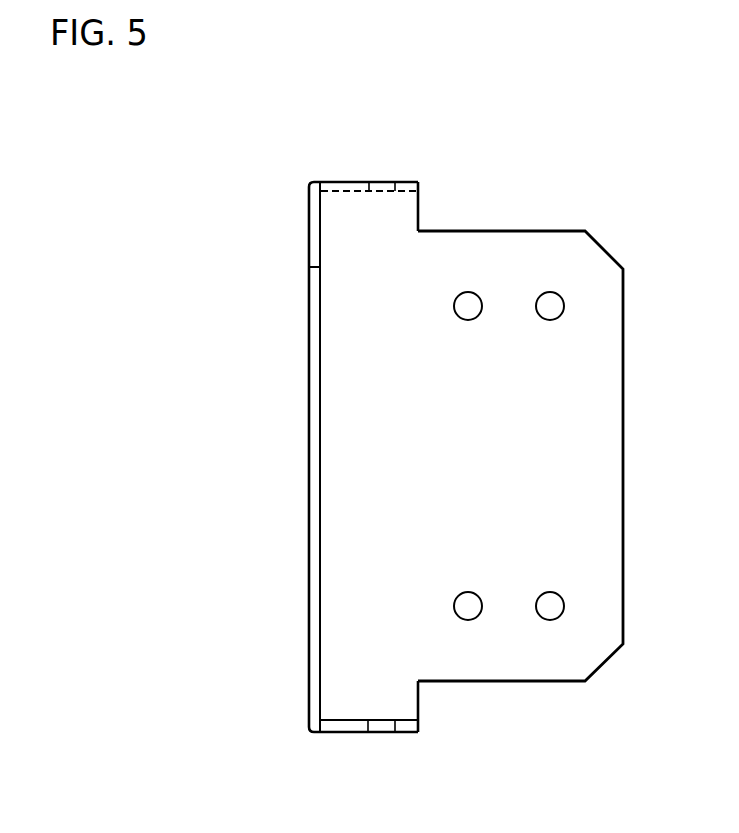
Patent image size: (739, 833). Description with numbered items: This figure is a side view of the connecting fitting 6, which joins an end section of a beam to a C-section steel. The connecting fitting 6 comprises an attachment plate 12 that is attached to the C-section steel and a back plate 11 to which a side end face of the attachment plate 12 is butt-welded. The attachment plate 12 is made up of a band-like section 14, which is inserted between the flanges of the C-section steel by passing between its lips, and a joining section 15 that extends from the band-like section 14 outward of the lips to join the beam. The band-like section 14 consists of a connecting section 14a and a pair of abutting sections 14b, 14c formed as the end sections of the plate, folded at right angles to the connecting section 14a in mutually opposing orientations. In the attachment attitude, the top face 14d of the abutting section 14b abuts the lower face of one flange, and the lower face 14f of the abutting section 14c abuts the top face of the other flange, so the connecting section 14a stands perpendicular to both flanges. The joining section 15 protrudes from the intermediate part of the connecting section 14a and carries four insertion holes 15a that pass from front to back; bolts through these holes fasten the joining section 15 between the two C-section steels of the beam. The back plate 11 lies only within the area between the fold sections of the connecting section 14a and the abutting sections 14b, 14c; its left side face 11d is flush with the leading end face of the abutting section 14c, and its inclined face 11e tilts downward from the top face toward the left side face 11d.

The connecting fitting 6 is at (483, 75).
The back plate 11 is at (317, 180).
The left side face 11d is at (313, 424).
The inclined face 11e is at (313, 233).
The attachment plate 12 is at (528, 118).
The band-like section 14 is at (378, 215).
The connecting section 14a is at (357, 507).
The abutting section 14b is at (418, 184).
The abutting section 14c is at (418, 721).
The top face 14d is at (350, 180).
The lower face 14f is at (341, 733).
The joining section 15 is at (518, 242).
The insertion holes 15a is at (478, 304).